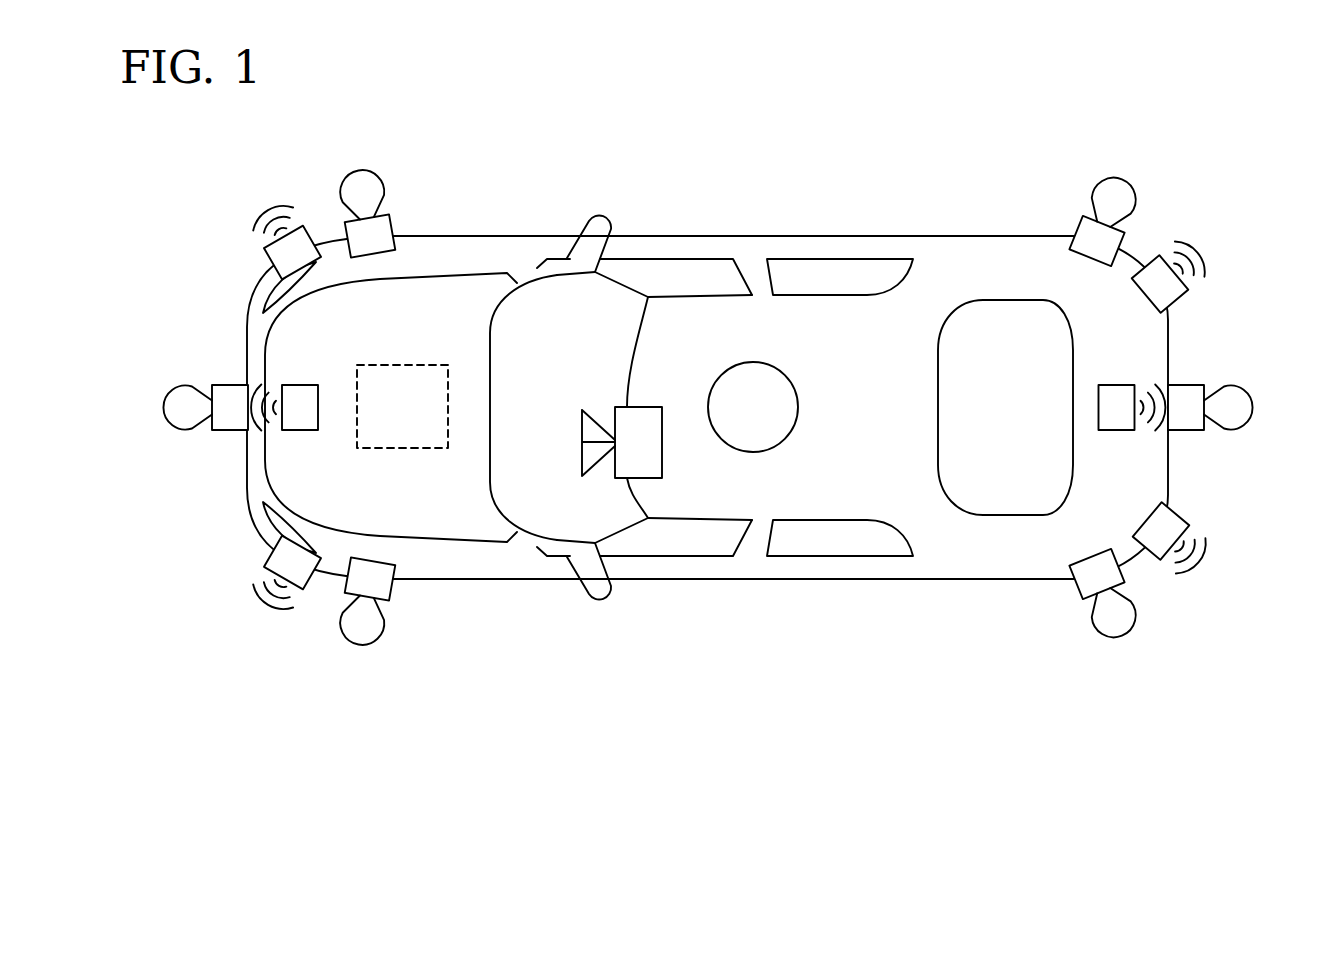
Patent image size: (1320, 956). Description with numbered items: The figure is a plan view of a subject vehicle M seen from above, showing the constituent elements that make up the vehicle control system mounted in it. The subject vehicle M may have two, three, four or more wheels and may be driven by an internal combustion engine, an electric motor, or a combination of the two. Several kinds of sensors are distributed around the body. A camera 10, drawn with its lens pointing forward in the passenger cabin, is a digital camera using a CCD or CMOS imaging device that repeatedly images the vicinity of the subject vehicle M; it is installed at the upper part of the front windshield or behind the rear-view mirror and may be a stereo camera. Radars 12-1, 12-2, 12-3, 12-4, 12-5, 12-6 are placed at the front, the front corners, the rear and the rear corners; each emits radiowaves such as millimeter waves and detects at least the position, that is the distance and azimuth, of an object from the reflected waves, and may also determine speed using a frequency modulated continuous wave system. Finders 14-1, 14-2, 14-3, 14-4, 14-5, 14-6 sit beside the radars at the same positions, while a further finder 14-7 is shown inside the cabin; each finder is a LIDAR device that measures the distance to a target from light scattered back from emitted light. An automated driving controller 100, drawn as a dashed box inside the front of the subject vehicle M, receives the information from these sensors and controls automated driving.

The subject vehicle M is at (808, 236).
The automated driving controller 100 is at (403, 363).
The camera 10 is at (662, 453).
The finder 14-7 is at (786, 438).
The radar 12-1 is at (297, 431).
The radar 12-2 is at (313, 588).
The radar 12-3 is at (304, 226).
The radar 12-4 is at (1118, 431).
The radar 12-5 is at (1148, 558).
The radar 12-6 is at (1148, 262).
The finder 14-1 is at (232, 385).
The finder 14-2 is at (392, 596).
The finder 14-3 is at (392, 216).
The finder 14-4 is at (1187, 385).
The finder 14-5 is at (1073, 594).
The finder 14-6 is at (1073, 226).